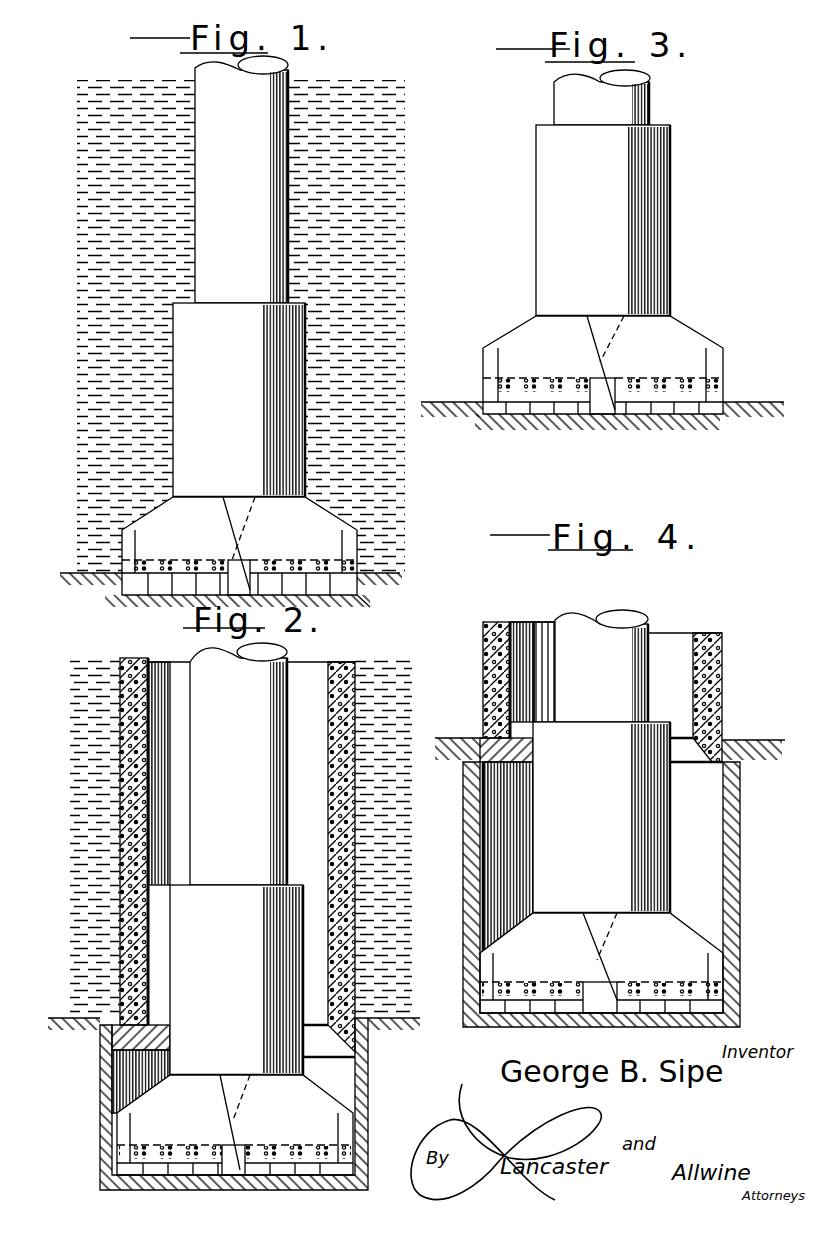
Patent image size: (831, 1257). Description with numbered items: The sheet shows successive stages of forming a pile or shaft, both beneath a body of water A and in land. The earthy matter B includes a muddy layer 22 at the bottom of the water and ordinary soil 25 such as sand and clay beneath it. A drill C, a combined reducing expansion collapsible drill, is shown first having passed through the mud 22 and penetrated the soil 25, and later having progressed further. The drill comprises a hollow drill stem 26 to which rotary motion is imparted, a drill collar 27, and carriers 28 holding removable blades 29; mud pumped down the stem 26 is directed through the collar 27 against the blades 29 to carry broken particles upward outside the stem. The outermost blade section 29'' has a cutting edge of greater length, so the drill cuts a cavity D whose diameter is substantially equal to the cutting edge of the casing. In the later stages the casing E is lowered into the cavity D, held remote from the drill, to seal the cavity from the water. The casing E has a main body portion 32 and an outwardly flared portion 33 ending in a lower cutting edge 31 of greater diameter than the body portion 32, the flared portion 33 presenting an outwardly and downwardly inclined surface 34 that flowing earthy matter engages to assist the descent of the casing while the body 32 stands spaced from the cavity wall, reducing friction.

In FIG. 1, the mud 22 is at (72, 578).
In FIG. 2, the mud 22 is at (52, 1017).
In FIG. 1, the ordinary soil 25 is at (372, 600).
In FIG. 3, the ordinary soil 25 is at (752, 430).
In FIG. 2, the ordinary soil 25 is at (101, 1088).
In FIG. 4, the ordinary soil 25 is at (465, 878).
In FIG. 1, the hollow drill stem 26 is at (241, 179).
In FIG. 3, the hollow drill stem 26 is at (656, 102).
In FIG. 2, the hollow drill stem 26 is at (238, 764).
In FIG. 4, the hollow drill stem 26 is at (640, 617).
In FIG. 1, the drill collar 27 is at (180, 433).
In FIG. 3, the drill collar 27 is at (546, 218).
In FIG. 2, the drill collar 27 is at (290, 997).
In FIG. 4, the drill collar 27 is at (665, 836).
In FIG. 1, the carriers 28 is at (239, 546).
In FIG. 3, the carriers 28 is at (603, 365).
In FIG. 2, the carriers 28 is at (235, 1125).
In FIG. 4, the carriers 28 is at (601, 963).
In FIG. 1, the removable blades 29 is at (244, 615).
In FIG. 3, the removable blades 29 is at (603, 451).
In FIG. 2, the removable blades 29 is at (235, 1189).
In FIG. 4, the removable blades 29 is at (601, 1027).
In FIG. 1, the terminal blade section 29'' is at (398, 559).
In FIG. 3, the terminal blade section 29'' is at (627, 390).
In FIG. 2, the lower cutting edge 31 is at (355, 1063).
In FIG. 4, the lower cutting edge 31 is at (485, 768).
In FIG. 2, the main body portion 32 is at (355, 957).
In FIG. 4, the main body portion 32 is at (725, 684).
In FIG. 2, the outwardly flared portion 33 is at (390, 1027).
In FIG. 4, the outwardly flared portion 33 is at (725, 741).
In FIG. 4, the inclined surface 34 is at (474, 737).
In FIG. 1, the body of water A is at (80, 237).
In FIG. 2, the body of water A is at (80, 722).
In FIG. 1, the earthy matter B is at (120, 598).
In FIG. 3, the earthy matter B is at (496, 425).
In FIG. 1, the apparatus for forming a cavity C is at (233, 411).
In FIG. 3, the apparatus for forming a cavity C is at (609, 239).
In FIG. 2, the apparatus for forming a cavity C is at (233, 978).
In FIG. 4, the apparatus for forming a cavity C is at (605, 826).
In FIG. 2, the cavity D is at (345, 1081).
In FIG. 4, the cavity D is at (712, 869).
In FIG. 2, the casing E is at (110, 881).
In FIG. 4, the casing E is at (483, 672).